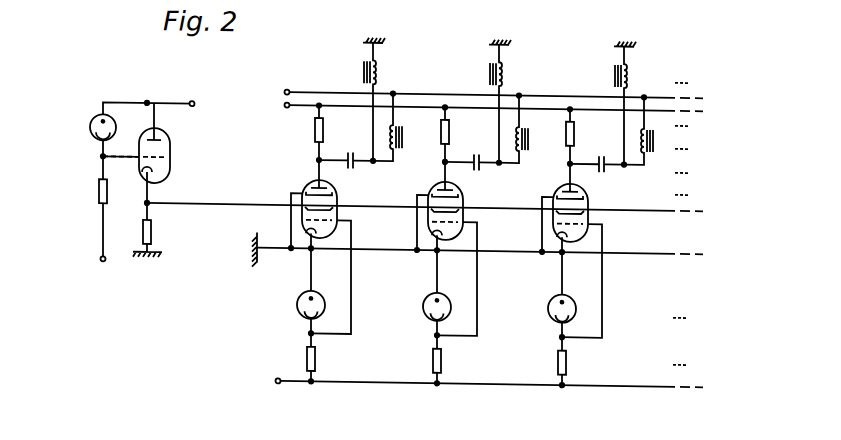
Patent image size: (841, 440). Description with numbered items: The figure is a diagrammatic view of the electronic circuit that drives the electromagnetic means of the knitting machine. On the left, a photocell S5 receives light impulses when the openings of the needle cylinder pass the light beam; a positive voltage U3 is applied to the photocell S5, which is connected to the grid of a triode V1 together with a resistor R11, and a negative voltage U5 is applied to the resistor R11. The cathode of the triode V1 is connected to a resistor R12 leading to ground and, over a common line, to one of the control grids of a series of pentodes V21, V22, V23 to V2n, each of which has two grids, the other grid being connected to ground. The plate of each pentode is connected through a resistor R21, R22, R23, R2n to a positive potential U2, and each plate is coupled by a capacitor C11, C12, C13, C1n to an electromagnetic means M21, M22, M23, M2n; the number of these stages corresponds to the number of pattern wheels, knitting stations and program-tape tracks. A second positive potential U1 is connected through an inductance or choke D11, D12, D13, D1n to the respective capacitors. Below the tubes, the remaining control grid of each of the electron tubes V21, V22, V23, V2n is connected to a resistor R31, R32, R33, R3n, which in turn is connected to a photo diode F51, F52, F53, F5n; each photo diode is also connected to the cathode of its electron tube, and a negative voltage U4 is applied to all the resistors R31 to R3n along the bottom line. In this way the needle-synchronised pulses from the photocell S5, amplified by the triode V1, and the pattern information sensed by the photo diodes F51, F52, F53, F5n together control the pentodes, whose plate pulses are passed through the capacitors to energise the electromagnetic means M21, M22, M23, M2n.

The photocell S5 is at (129, 140).
The triode V1 is at (148, 161).
The resistor R11 is at (87, 218).
The resistor R12 is at (160, 239).
The positive potential U1 is at (472, 93).
The positive potential U2 is at (472, 115).
The positive voltage U3 is at (213, 108).
The negative voltage U4 is at (463, 387).
The negative voltage U5 is at (94, 277).
The electromagnetic means M21 is at (389, 101).
The electromagnetic means M22 is at (515, 103).
The electromagnetic means M23 is at (639, 104).
The electromagnetic means M2n is at (700, 85).
The inductance or choke D11 is at (392, 131).
The inductance or choke D12 is at (518, 133).
The inductance or choke D13 is at (643, 136).
The inductance or choke D1n is at (699, 154).
The capacitor C11 is at (344, 149).
The capacitor C12 is at (470, 150).
The capacitor C13 is at (594, 153).
The capacitor C1n is at (698, 179).
The resistor R21 is at (303, 141).
The resistor R22 is at (430, 143).
The resistor R23 is at (557, 145).
The resistor R2n is at (699, 132).
The pentode V21 is at (329, 257).
The pentode V22 is at (456, 258).
The pentode V23 is at (581, 260).
The pentode V2n is at (698, 200).
The photo diode F51 is at (296, 318).
The photo diode F52 is at (422, 320).
The photo diode F53 is at (547, 322).
The photo diode F5n is at (696, 322).
The resistor R31 is at (328, 365).
The resistor R32 is at (454, 367).
The resistor R33 is at (580, 369).
The resistor R3n is at (697, 369).